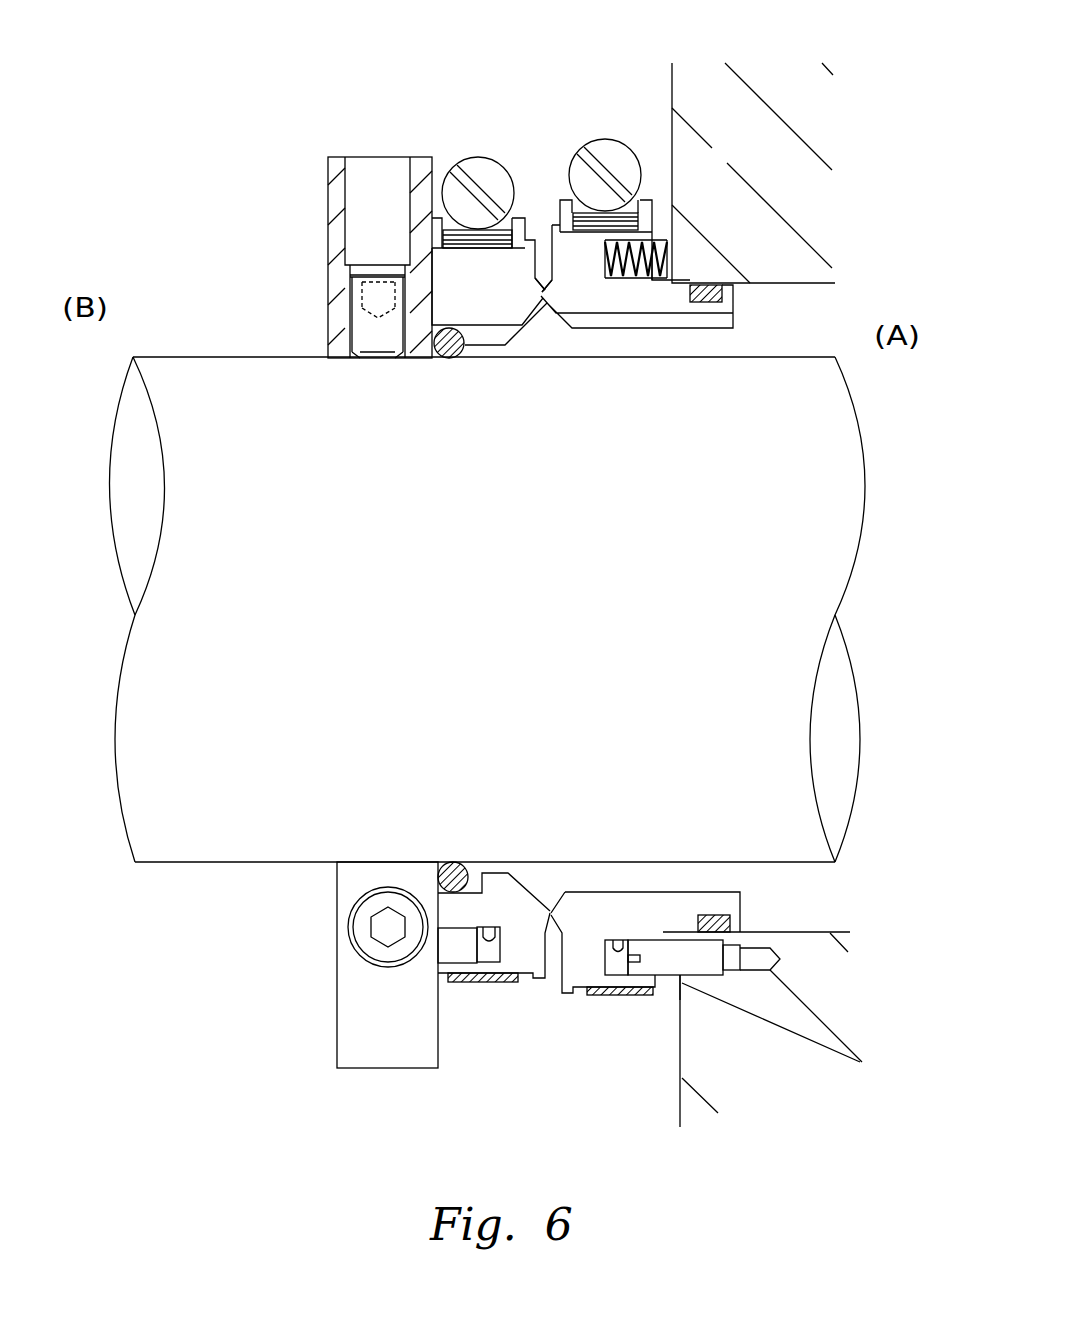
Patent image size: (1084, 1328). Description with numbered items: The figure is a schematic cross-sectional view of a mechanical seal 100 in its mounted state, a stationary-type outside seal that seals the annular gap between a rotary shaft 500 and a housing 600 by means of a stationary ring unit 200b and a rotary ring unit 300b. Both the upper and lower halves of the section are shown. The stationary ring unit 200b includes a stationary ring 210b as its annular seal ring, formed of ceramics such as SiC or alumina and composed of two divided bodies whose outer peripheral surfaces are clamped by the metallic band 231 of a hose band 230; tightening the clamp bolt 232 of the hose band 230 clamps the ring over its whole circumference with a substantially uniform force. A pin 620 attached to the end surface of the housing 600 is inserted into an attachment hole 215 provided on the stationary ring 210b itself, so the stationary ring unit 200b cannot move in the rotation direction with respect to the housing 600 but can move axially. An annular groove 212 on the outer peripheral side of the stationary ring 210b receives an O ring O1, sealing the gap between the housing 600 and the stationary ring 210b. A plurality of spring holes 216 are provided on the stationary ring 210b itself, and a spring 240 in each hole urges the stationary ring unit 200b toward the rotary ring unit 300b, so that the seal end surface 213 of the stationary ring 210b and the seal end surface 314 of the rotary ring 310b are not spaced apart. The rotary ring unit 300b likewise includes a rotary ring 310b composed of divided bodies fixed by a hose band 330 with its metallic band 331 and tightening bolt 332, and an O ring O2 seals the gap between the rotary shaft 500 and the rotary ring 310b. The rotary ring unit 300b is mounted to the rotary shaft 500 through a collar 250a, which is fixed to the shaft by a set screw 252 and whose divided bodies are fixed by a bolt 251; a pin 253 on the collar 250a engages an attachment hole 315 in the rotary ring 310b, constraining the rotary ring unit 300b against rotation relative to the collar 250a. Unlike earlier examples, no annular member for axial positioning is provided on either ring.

The mechanical seal 100 is at (559, 238).
The hose band 330 is at (462, 248).
The tightening bolt 232 is at (607, 138).
The hose band 230 is at (714, 244).
The tightening bolt 332 is at (497, 172).
The collar 250a is at (338, 178).
The set screw 252 is at (360, 330).
The spring 240 is at (660, 250).
The O ring O1 is at (722, 293).
The O ring O2 is at (445, 345).
The seal end surface 213 is at (545, 292).
The seal end surface 314 is at (548, 303).
The spring hole 216 is at (632, 280).
The rotary shaft 500 is at (487, 609).
The housing 600 is at (762, 595).
The rotary ring 310b is at (551, 850).
The attachment hole 315 is at (490, 945).
The attachment hole 215 is at (620, 948).
The stationary ring 210b is at (663, 864).
The annular groove 212 is at (735, 945).
The bolt 251 is at (340, 925).
The metallic band 331 is at (497, 985).
The metallic band 231 is at (618, 995).
The rotary ring unit 300b is at (442, 946).
The stationary ring unit 200b is at (666, 972).
The pin 253 is at (448, 950).
The pin 620 is at (683, 985).